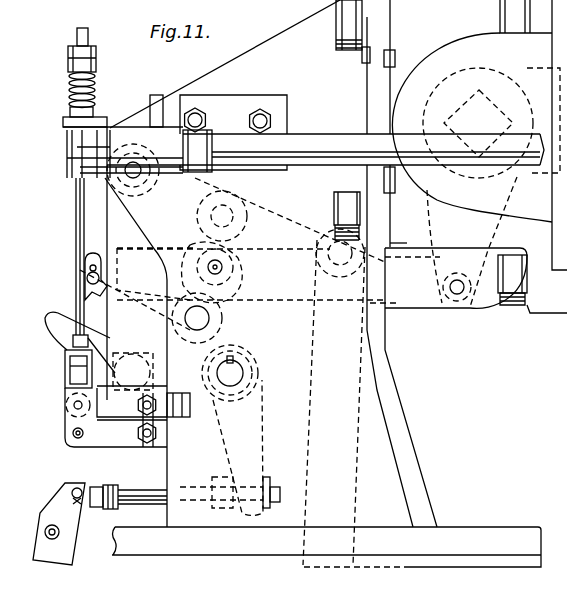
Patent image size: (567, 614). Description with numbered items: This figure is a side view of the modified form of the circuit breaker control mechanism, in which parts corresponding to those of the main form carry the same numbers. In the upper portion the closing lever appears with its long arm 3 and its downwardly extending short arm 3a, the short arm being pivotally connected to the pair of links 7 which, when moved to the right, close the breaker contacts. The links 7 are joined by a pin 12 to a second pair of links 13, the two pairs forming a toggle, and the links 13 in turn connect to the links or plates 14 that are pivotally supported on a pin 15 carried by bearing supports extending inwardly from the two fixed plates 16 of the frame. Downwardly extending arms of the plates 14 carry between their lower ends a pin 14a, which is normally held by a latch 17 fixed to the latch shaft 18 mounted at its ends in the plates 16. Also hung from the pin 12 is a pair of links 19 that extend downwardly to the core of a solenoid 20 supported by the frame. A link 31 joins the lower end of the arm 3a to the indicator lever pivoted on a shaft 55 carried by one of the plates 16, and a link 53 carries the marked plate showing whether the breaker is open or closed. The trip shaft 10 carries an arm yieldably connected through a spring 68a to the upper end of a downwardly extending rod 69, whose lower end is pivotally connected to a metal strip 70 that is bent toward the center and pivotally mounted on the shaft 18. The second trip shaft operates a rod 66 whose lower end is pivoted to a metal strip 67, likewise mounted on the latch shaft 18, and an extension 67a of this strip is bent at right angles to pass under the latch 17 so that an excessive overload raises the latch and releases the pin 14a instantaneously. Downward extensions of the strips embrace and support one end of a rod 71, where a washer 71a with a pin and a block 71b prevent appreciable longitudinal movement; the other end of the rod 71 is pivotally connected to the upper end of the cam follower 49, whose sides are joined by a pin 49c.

The long arm 3 is at (533, 70).
The short arm 3a is at (432, 232).
The links 7 is at (409, 303).
The trip shaft 10 is at (323, 147).
The pin 12 is at (322, 247).
The links 13 is at (290, 220).
The links or plates 14 is at (230, 209).
The pin 14a is at (140, 348).
The pin 15 is at (140, 182).
The fixed plates 16 is at (246, 114).
The latch 17 is at (50, 334).
The latch shaft 18 is at (233, 372).
The links 19 is at (235, 371).
The solenoid 20 is at (437, 562).
The link 31 is at (297, 300).
The cam follower 49 is at (60, 533).
The pin 49c is at (72, 490).
The link 53 is at (86, 299).
The shaft 55 is at (200, 318).
The rod 66 is at (76, 227).
The metal strip 67 is at (100, 438).
The extension 67a is at (173, 421).
The spring 68a is at (96, 77).
The rod 69 is at (85, 30).
The metal strip 70 is at (103, 403).
The rod 71 is at (148, 482).
The washer 71a is at (271, 482).
The block 71b is at (223, 477).